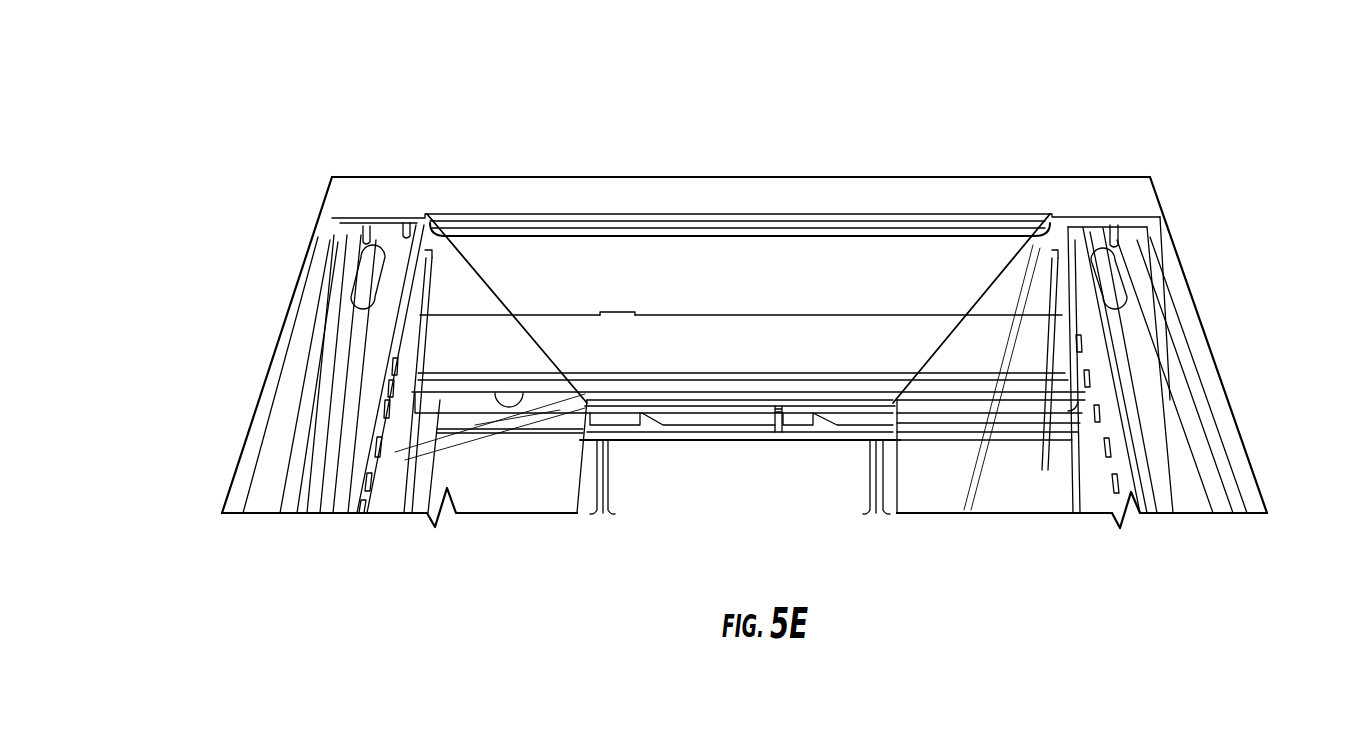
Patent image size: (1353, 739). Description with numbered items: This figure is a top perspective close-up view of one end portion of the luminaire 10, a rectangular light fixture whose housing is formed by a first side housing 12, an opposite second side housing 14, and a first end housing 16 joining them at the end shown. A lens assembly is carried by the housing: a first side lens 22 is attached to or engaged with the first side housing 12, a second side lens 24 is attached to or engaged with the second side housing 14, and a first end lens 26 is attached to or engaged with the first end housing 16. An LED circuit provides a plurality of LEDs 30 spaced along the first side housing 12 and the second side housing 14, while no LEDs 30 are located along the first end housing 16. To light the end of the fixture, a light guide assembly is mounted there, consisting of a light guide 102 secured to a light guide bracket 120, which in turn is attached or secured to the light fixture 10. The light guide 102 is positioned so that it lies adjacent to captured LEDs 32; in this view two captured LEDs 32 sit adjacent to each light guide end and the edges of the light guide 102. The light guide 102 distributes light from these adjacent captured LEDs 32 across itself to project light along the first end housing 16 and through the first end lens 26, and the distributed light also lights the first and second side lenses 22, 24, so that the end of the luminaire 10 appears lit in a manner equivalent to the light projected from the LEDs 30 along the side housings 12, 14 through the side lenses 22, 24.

The luminaire 10 is at (717, 499).
The first side housing 12 is at (303, 360).
The second side housing 14 is at (1152, 358).
The first end housing 16 is at (927, 192).
The first side lens 22 is at (492, 490).
The second side lens 24 is at (1015, 482).
The first end lens 26 is at (788, 290).
The LEDs 30 is at (365, 470).
The captured LEDs 32 is at (398, 373).
The light guide 102 is at (620, 357).
The light guide bracket 120 is at (723, 287).